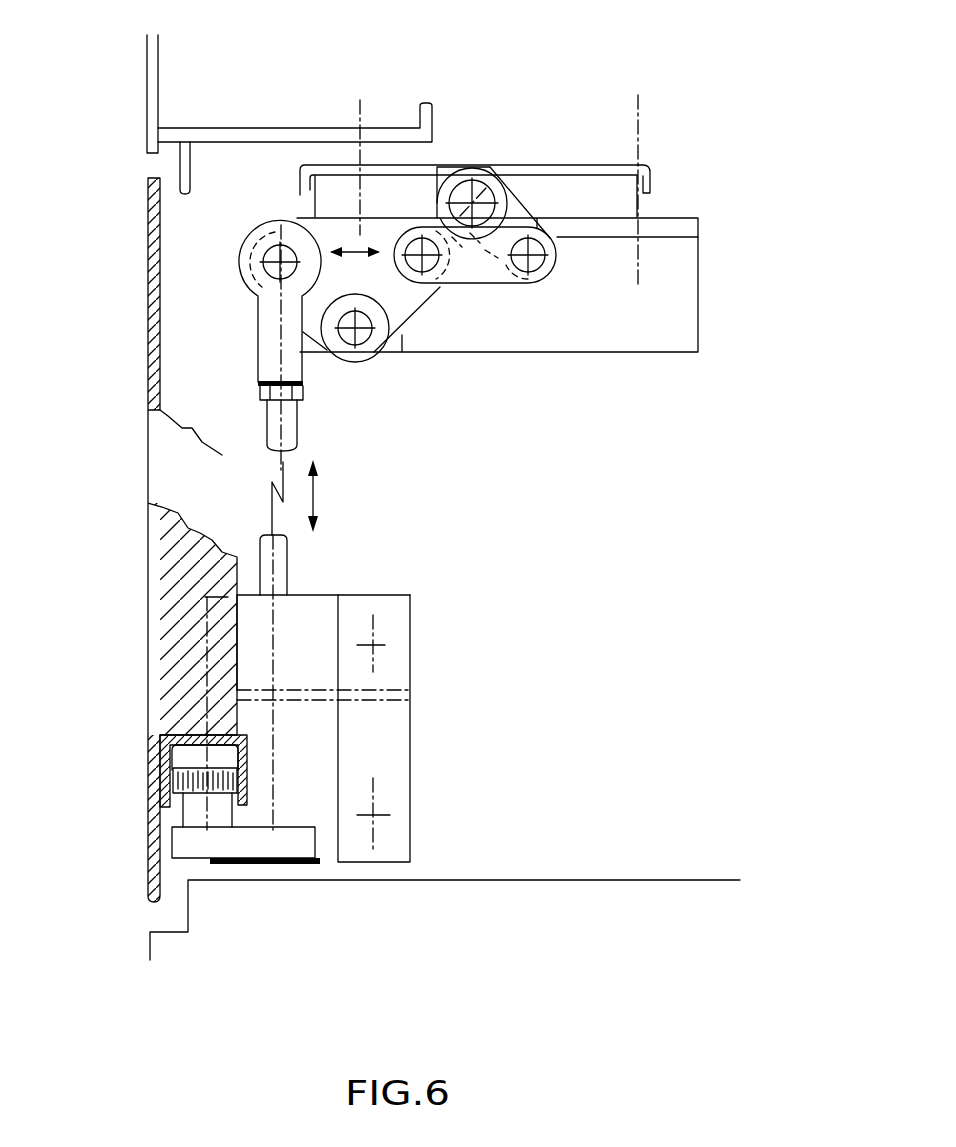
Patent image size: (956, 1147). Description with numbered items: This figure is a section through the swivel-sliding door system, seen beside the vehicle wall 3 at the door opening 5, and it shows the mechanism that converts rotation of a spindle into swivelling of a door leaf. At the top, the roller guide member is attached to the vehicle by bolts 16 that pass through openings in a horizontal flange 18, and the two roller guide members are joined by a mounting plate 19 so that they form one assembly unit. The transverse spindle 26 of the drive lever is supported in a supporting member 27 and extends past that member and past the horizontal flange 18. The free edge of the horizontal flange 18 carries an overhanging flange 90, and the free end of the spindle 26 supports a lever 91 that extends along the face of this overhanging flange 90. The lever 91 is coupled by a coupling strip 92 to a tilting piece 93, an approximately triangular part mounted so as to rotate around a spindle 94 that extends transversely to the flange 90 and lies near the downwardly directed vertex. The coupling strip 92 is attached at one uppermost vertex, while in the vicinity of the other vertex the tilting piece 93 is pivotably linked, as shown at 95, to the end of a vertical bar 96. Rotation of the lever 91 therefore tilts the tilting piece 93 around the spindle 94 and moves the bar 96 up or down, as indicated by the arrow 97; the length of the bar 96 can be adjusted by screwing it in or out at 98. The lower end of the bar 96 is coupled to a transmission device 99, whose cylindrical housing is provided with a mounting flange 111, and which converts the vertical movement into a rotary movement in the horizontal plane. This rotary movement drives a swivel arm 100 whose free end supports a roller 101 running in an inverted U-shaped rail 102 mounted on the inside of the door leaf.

The vehicle wall 3 is at (150, 82).
The door opening 5 is at (162, 163).
The bolts 16 is at (360, 110).
The horizontal flange 18 is at (662, 227).
The mounting plate 19 is at (600, 165).
The transverse spindle 26 is at (472, 203).
The supporting member 27 is at (502, 167).
The overhanging flange 90 is at (499, 294).
The lever 91 is at (513, 208).
The coupling strip 92 is at (480, 265).
The tilting piece 93 is at (405, 293).
The spindle 94 is at (370, 343).
The pivotable link 95 is at (245, 252).
The vertical bar 96 is at (287, 413).
The arrow 97 is at (320, 492).
The length adjustment 98 is at (248, 379).
The transmission device 99 is at (324, 682).
The swivel arm 100 is at (218, 838).
The roller 101 is at (205, 780).
The inverted U-shaped rail 102 is at (165, 757).
The mounting flange 111 is at (387, 740).